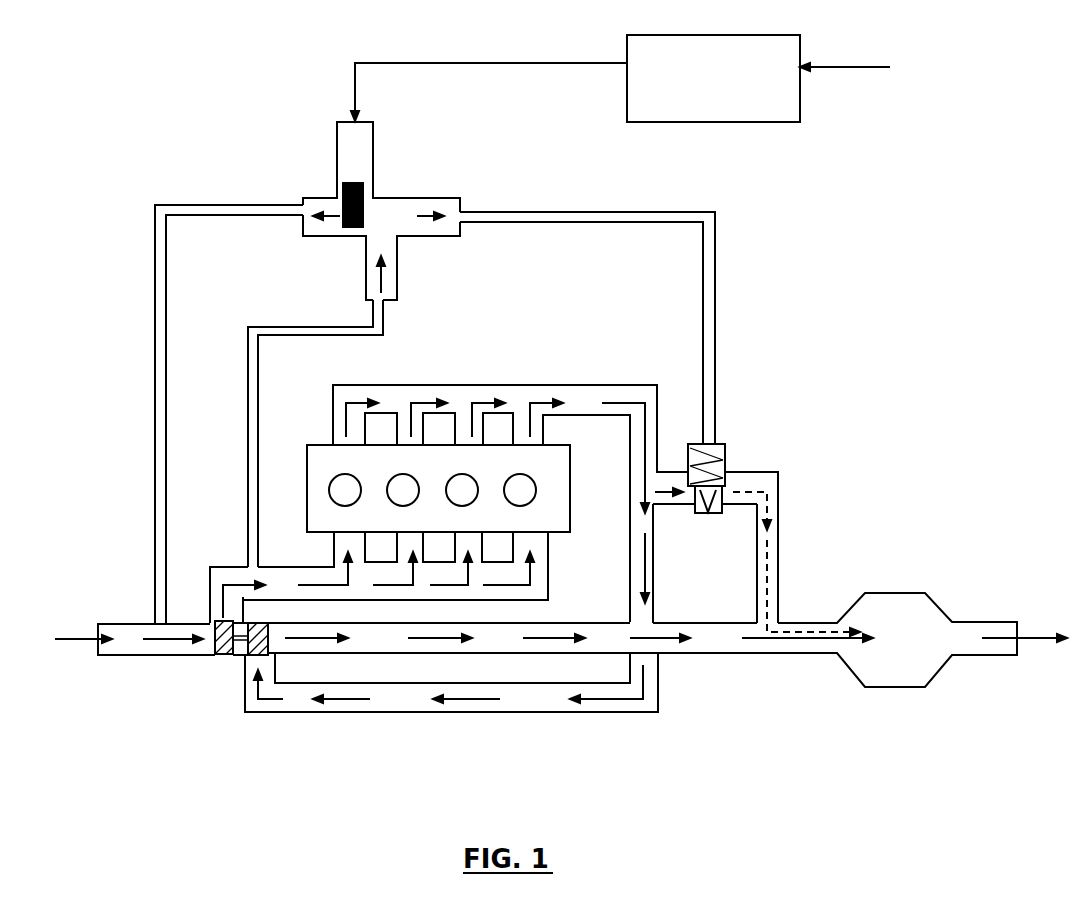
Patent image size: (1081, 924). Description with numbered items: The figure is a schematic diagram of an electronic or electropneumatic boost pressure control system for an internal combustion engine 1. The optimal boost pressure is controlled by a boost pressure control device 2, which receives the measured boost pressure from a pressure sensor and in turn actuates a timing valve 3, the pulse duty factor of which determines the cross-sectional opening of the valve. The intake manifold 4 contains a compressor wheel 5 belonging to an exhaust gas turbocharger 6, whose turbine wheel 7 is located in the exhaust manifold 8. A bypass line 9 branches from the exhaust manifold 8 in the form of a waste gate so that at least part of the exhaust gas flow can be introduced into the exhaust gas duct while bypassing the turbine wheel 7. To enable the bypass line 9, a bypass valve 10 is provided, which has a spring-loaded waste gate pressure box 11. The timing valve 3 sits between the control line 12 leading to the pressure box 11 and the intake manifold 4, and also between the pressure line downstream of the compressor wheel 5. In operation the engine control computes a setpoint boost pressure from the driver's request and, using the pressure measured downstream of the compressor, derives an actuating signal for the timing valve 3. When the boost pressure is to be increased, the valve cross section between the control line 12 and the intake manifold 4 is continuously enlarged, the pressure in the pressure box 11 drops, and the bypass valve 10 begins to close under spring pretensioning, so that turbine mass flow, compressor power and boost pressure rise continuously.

The internal combustion engine 1 is at (567, 518).
The boost pressure control device 2 is at (646, 78).
The timing valve 3 is at (323, 163).
The intake manifold 4 is at (137, 647).
The compressor wheel 5 is at (220, 655).
The exhaust gas turbocharger 6 is at (223, 723).
The turbine wheel 7 is at (249, 655).
The exhaust manifold 8 is at (586, 395).
The bypass line 9 is at (778, 512).
The bypass valve 10 is at (748, 437).
The spring-loaded waste gate pressure box 11 is at (720, 444).
The control line 12 is at (600, 216).